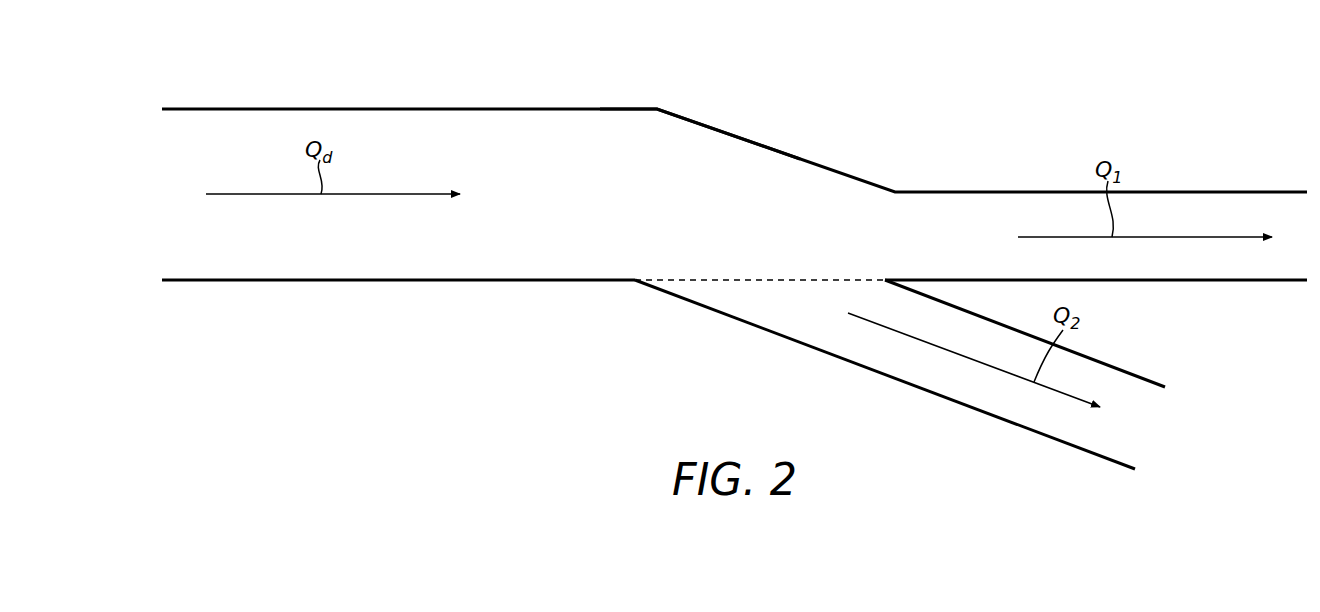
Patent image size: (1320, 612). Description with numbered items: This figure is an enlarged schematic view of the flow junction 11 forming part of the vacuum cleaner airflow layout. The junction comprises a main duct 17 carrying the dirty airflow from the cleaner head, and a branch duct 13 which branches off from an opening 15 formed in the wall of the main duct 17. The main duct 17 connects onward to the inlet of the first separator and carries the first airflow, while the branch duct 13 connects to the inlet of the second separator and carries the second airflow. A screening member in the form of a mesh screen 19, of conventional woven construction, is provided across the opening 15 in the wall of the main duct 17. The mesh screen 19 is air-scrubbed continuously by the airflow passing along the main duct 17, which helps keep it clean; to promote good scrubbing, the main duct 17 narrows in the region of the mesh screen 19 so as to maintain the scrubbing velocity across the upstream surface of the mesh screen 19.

The flow junction 11 is at (928, 90).
The branch duct 13 is at (967, 409).
The opening 15 is at (700, 288).
The main duct 17 is at (633, 108).
The mesh screen 19 is at (765, 282).